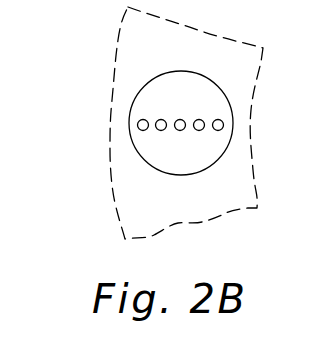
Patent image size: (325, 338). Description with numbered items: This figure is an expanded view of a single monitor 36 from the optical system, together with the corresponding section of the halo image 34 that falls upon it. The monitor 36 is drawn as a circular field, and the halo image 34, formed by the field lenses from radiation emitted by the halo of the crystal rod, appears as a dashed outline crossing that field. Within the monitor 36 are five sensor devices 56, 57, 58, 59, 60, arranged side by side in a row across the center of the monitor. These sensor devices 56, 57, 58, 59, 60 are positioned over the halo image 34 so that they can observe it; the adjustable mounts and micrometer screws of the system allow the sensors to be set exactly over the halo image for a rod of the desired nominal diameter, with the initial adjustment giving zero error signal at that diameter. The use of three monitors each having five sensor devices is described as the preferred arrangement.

The halo image 34 is at (112, 204).
The monitor 36 is at (203, 167).
The sensor device 56 is at (143, 131).
The sensor device 57 is at (161, 119).
The sensor device 58 is at (180, 131).
The sensor device 59 is at (199, 119).
The sensor device 60 is at (218, 131).